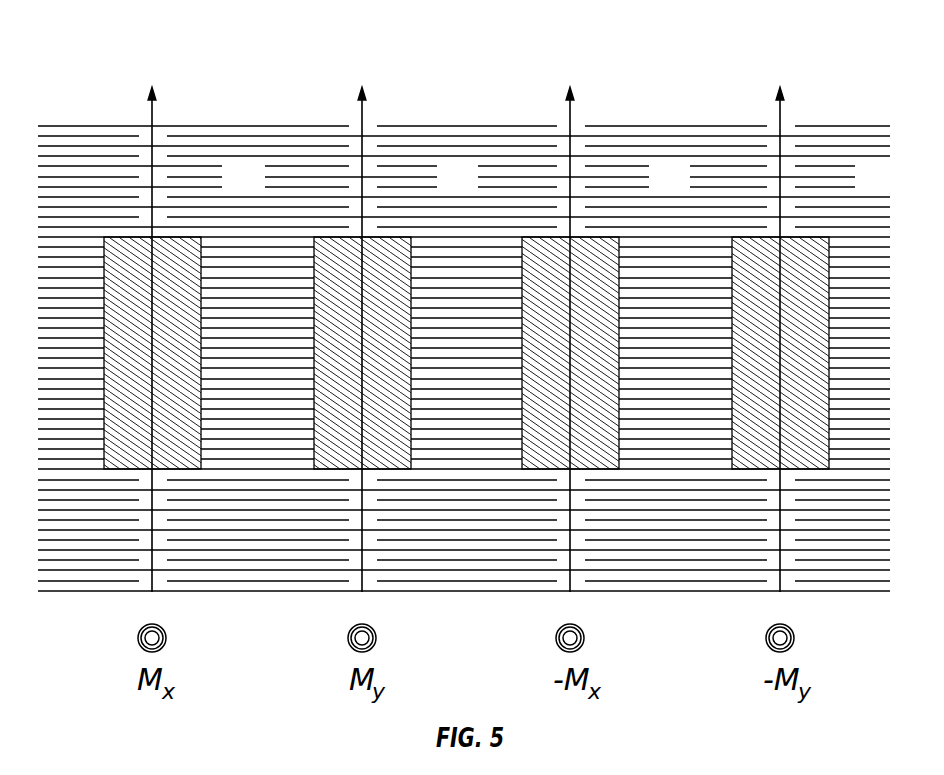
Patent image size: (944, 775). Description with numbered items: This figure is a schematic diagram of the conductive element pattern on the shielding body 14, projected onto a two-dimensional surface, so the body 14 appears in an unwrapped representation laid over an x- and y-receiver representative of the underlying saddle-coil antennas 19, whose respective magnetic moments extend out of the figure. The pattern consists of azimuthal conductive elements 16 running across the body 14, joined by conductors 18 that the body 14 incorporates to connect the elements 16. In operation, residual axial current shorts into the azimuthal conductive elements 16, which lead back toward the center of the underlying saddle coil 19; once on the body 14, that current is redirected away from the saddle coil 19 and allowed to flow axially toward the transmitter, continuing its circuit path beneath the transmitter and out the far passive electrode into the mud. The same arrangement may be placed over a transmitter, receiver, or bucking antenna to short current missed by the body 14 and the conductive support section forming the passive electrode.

The body 14 is at (39, 600).
The azimuthal conductive elements 16 is at (180, 111).
The conductors 18 is at (149, 94).
The saddle-coil antennas 19 is at (171, 236).